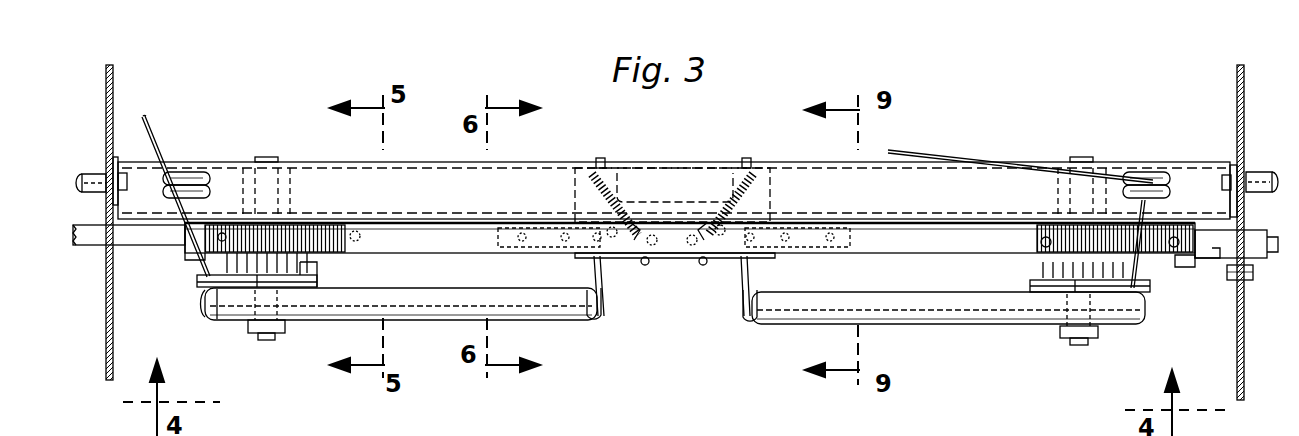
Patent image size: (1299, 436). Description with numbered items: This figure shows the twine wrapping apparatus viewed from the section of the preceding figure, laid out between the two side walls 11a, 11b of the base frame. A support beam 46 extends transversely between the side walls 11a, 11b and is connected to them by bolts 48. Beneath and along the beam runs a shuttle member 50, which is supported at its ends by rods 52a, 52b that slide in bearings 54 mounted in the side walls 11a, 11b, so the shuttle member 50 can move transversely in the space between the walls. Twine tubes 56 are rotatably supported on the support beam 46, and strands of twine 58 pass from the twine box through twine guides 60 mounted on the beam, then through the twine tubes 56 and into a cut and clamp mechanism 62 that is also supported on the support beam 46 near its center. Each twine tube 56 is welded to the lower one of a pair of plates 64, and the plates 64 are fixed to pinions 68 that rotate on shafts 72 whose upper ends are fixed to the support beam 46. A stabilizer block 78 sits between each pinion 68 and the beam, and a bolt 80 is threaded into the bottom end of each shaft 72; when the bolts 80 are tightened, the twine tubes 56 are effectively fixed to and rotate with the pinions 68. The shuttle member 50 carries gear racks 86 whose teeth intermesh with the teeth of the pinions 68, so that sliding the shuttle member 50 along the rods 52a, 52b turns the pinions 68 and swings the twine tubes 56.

The side wall 11a is at (107, 88).
The side wall 11b is at (1238, 86).
The support beam 46 is at (444, 162).
The bolts 48 is at (97, 150).
The shuttle member 50 is at (486, 244).
The rod 52a is at (92, 246).
The rod 52b is at (1262, 250).
The bearings 54 is at (1258, 258).
The twine tubes 56 is at (446, 312).
The strands of twine 58 is at (154, 128).
The twine guides 60 is at (190, 172).
The cut and clamp mechanism 62 is at (684, 158).
The plates 64 is at (198, 286).
The pinions 68 is at (306, 268).
The shafts 72 is at (268, 157).
The stabilizer block 78 is at (290, 194).
The bolt 80 is at (264, 337).
The gear racks 86 is at (352, 242).